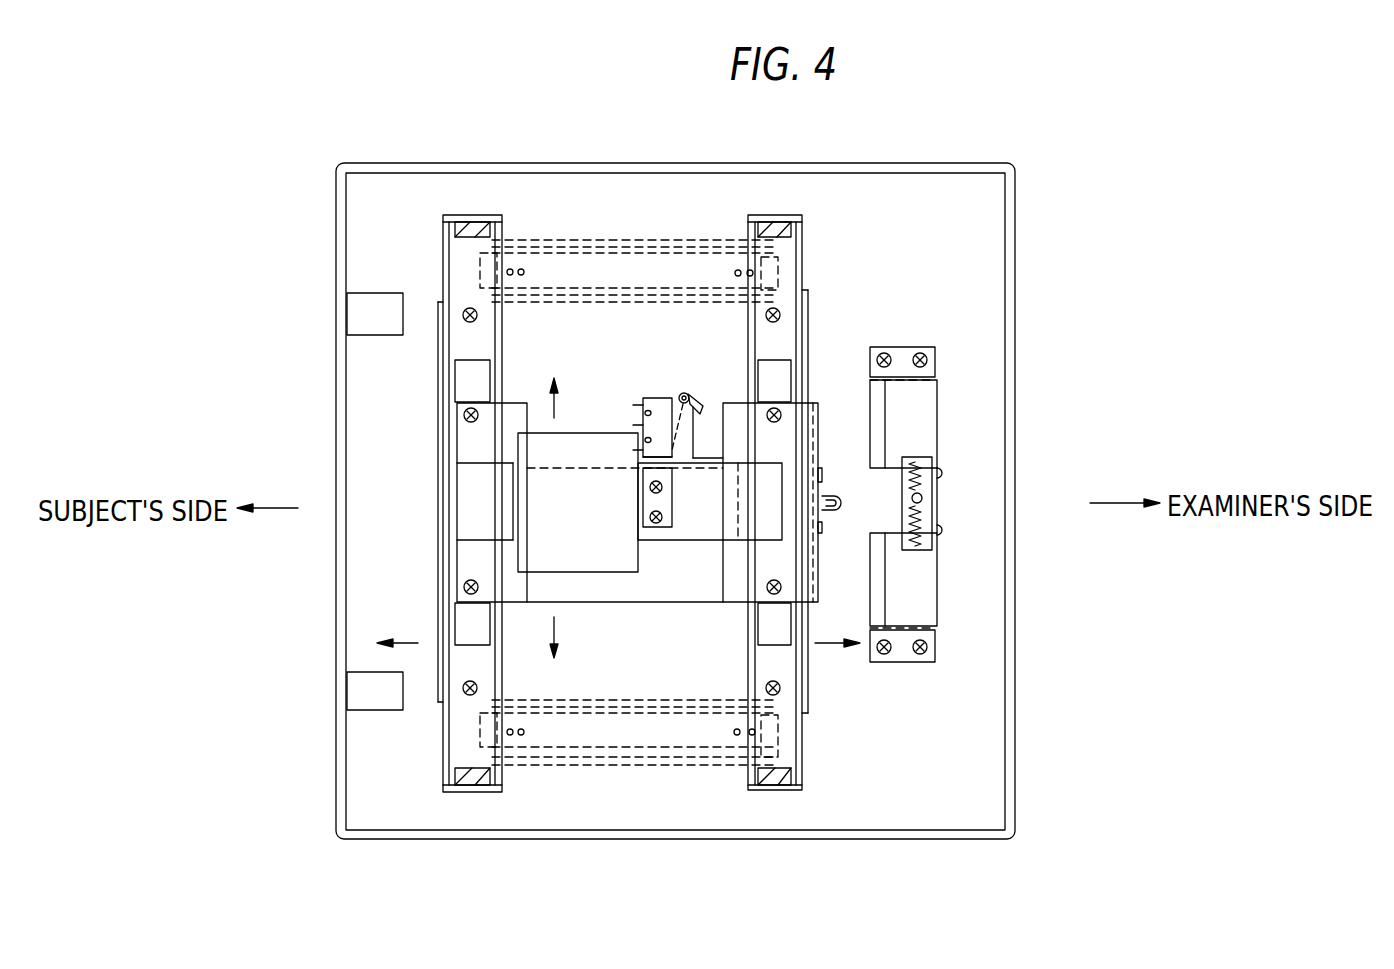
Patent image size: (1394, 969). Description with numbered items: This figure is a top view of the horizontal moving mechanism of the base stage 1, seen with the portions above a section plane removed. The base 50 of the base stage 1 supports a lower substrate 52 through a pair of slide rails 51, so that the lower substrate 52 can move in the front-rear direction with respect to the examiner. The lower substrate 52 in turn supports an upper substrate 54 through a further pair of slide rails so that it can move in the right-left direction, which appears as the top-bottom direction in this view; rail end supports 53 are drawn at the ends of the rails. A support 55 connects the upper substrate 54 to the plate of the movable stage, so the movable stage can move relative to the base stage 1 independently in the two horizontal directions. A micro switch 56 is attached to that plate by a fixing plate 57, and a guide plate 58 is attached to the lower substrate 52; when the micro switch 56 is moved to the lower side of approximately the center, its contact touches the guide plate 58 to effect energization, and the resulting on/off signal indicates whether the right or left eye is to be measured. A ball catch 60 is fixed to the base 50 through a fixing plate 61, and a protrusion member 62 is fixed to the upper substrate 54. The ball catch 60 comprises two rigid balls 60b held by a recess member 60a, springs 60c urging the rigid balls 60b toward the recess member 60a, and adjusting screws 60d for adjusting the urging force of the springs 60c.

The base stage 1 is at (322, 292).
The base 50 is at (363, 782).
The slide rails 51 is at (628, 275).
The lower substrate 52 is at (710, 670).
The rail support 53 is at (443, 253).
The upper substrate 54 is at (470, 558).
The support 55 is at (530, 497).
The micro switch 56 is at (652, 397).
The fixing plate 57 is at (652, 505).
The guide plate 58 is at (703, 412).
The ball catch 60 is at (977, 520).
The recess member 60a is at (932, 552).
The rigid balls 60b is at (923, 486).
The springs 60c is at (928, 464).
The adjusting screws 60d is at (912, 476).
The fixing plate 61 is at (947, 392).
The protrusion member 62 is at (828, 484).